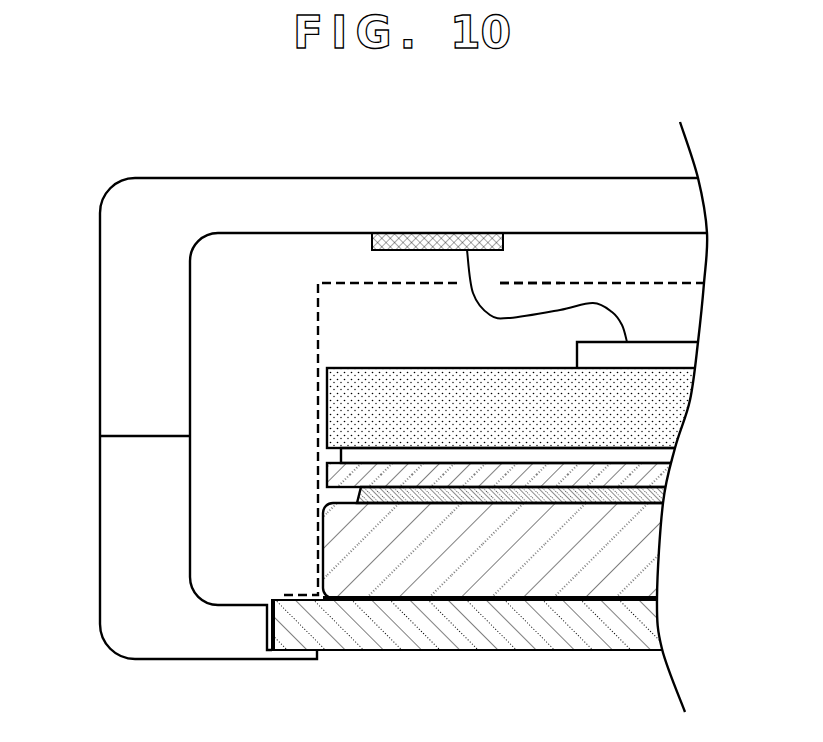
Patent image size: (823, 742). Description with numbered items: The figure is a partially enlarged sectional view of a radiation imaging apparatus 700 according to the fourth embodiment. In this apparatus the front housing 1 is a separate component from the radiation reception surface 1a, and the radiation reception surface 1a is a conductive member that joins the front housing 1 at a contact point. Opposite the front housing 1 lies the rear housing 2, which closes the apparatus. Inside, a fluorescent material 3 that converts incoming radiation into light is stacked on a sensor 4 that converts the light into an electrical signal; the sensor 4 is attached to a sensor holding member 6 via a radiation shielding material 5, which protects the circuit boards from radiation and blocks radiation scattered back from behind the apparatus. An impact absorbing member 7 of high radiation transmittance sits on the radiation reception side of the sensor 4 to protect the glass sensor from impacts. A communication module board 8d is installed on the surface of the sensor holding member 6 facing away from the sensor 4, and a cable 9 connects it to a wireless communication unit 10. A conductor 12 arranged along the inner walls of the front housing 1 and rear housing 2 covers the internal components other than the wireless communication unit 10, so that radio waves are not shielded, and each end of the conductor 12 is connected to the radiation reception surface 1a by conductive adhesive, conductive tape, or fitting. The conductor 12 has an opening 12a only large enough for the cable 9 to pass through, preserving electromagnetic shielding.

The imaging apparatus 700 is at (46, 92).
The front housing 1 is at (170, 648).
The radiation reception surface 1a is at (527, 642).
The rear housing 2 is at (215, 178).
The fluorescent material 3 is at (663, 493).
The sensor 4 is at (665, 475).
The radiation shielding material 5 is at (670, 453).
The sensor holding member 6 is at (672, 406).
The impact absorbing member 7 is at (650, 549).
The communication module board 8d is at (687, 353).
The cable 9 is at (603, 303).
The wireless communication unit 10 is at (408, 233).
The conductor 12 is at (333, 283).
The opening 12a is at (487, 283).